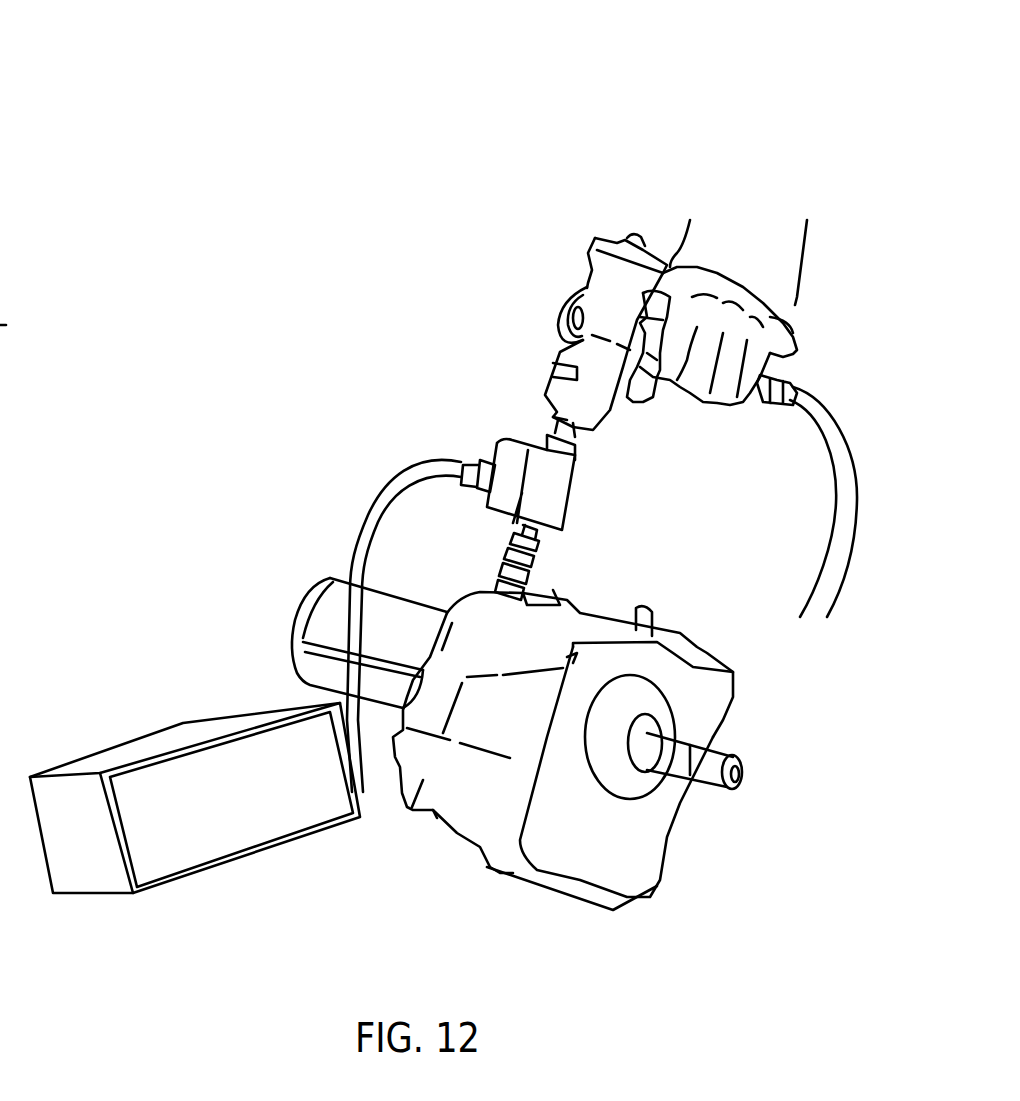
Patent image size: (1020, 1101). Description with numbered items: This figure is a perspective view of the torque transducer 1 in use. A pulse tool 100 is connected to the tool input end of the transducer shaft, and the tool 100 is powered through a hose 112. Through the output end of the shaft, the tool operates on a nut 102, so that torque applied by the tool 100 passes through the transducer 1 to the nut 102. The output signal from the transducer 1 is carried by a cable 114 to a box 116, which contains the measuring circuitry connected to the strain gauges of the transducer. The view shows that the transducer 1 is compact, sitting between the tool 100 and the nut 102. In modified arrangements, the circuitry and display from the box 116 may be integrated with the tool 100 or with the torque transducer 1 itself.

The pulse tool 100 is at (615, 240).
The hose 112 is at (823, 412).
The torque transducer 1 is at (543, 487).
The cable 114 is at (363, 545).
The nut 102 is at (527, 590).
The box 116 is at (200, 775).